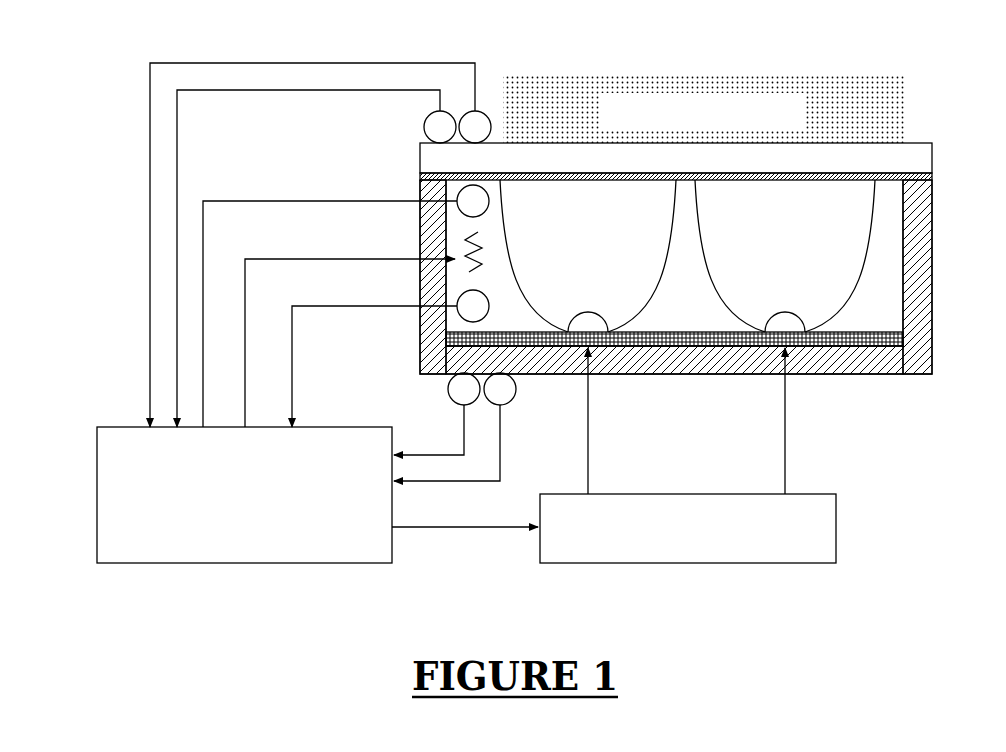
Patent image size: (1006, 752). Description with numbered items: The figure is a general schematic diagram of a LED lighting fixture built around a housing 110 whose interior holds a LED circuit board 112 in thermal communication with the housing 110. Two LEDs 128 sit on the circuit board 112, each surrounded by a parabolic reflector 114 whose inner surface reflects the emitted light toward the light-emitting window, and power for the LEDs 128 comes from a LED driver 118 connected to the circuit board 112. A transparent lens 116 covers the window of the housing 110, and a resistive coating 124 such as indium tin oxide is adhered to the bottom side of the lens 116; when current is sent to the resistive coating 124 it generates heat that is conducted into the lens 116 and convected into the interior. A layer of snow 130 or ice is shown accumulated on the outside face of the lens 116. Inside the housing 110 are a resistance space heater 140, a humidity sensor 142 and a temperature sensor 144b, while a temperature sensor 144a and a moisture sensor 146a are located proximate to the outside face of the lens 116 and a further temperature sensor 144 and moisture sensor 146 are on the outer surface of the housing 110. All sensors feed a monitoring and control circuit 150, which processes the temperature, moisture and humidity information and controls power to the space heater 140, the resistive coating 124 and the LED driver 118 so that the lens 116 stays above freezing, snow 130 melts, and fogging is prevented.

The housing 110 is at (931, 318).
The LED circuit board 112 is at (848, 331).
The reflector 114 is at (716, 284).
The lens 116 is at (933, 158).
The LED driver 118 is at (838, 514).
The resistive coating 124 is at (932, 176).
The LED 128 is at (583, 310).
The snow 130 is at (893, 96).
The resistance space heater 140 is at (482, 268).
The humidity sensor 142 is at (490, 206).
The temperature sensor 144 is at (512, 403).
The temperature sensor 144a is at (491, 118).
The temperature sensor 144b is at (488, 311).
The moisture sensor 146 is at (449, 405).
The moisture sensor 146a is at (424, 128).
The monitoring and control circuit 150 is at (353, 565).